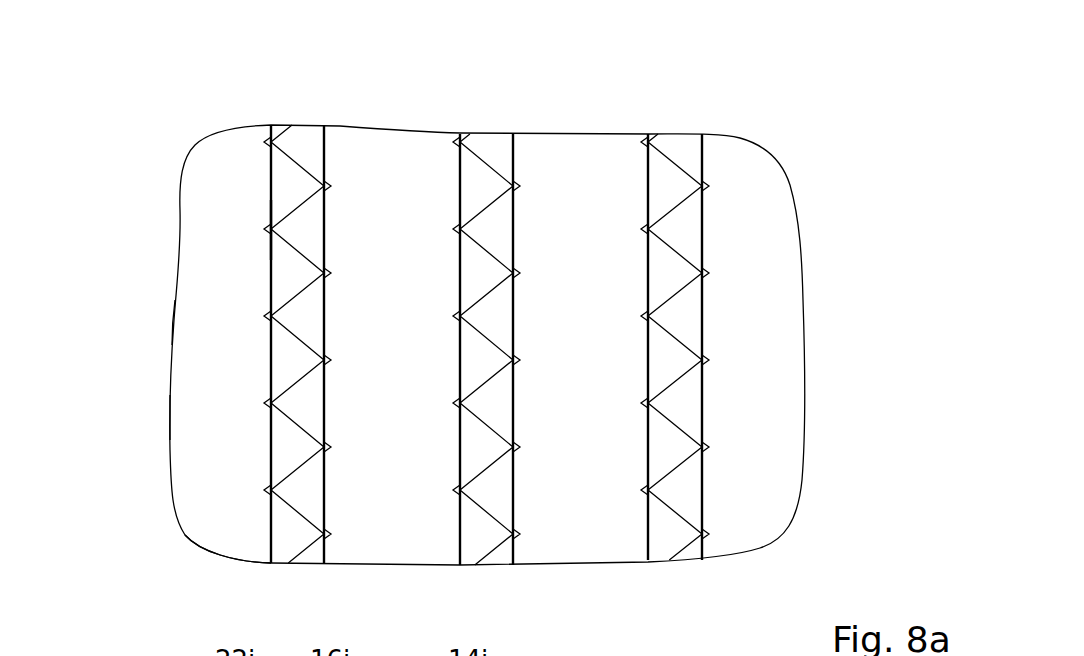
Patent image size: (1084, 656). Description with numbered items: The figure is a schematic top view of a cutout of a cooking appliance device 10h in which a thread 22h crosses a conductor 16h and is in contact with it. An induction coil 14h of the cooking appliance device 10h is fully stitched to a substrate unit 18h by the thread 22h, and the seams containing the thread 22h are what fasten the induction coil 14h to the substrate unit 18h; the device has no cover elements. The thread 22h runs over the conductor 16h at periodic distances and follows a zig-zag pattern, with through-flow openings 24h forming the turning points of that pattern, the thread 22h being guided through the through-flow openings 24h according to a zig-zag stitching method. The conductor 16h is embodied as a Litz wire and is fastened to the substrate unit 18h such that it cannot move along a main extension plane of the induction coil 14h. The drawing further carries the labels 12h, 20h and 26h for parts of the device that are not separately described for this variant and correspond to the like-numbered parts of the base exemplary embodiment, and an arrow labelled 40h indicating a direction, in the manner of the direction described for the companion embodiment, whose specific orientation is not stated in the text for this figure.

The cooking appliance device 10h is at (178, 37).
The backing layer 12h is at (178, 86).
The induction coil 14h is at (466, 73).
The conductor 16h is at (204, 282).
The substrate unit 18h is at (173, 321).
The corner 20h is at (162, 568).
The thread 22h is at (293, 157).
The through-flow openings 24h is at (268, 229).
The side edge 26h is at (168, 412).
The direction of flow 40h is at (910, 220).